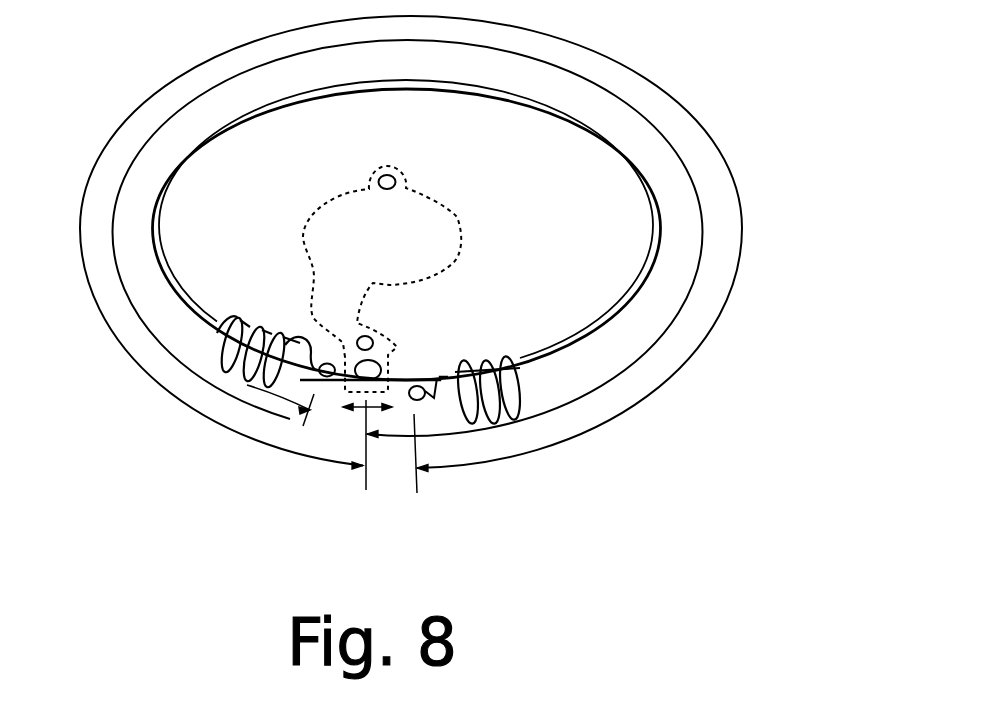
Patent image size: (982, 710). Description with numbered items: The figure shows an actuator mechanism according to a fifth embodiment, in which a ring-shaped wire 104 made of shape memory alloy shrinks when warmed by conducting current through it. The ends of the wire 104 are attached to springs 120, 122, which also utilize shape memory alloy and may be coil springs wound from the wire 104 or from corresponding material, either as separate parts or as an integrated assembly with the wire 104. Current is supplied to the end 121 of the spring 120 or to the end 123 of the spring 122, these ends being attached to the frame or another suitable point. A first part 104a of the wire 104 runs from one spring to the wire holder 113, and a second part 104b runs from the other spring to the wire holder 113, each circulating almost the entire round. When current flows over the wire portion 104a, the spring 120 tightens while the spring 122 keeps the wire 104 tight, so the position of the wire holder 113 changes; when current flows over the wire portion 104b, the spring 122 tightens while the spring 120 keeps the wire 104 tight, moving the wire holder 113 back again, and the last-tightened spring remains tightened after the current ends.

The wire 104 is at (660, 222).
The first part of the wire 104a is at (700, 260).
The second part of the wire 104b is at (717, 340).
The wire holder 113 is at (372, 375).
The spring 120 is at (247, 383).
The end of the spring 121 is at (318, 376).
The spring 122 is at (520, 397).
The end of the spring 123 is at (418, 400).